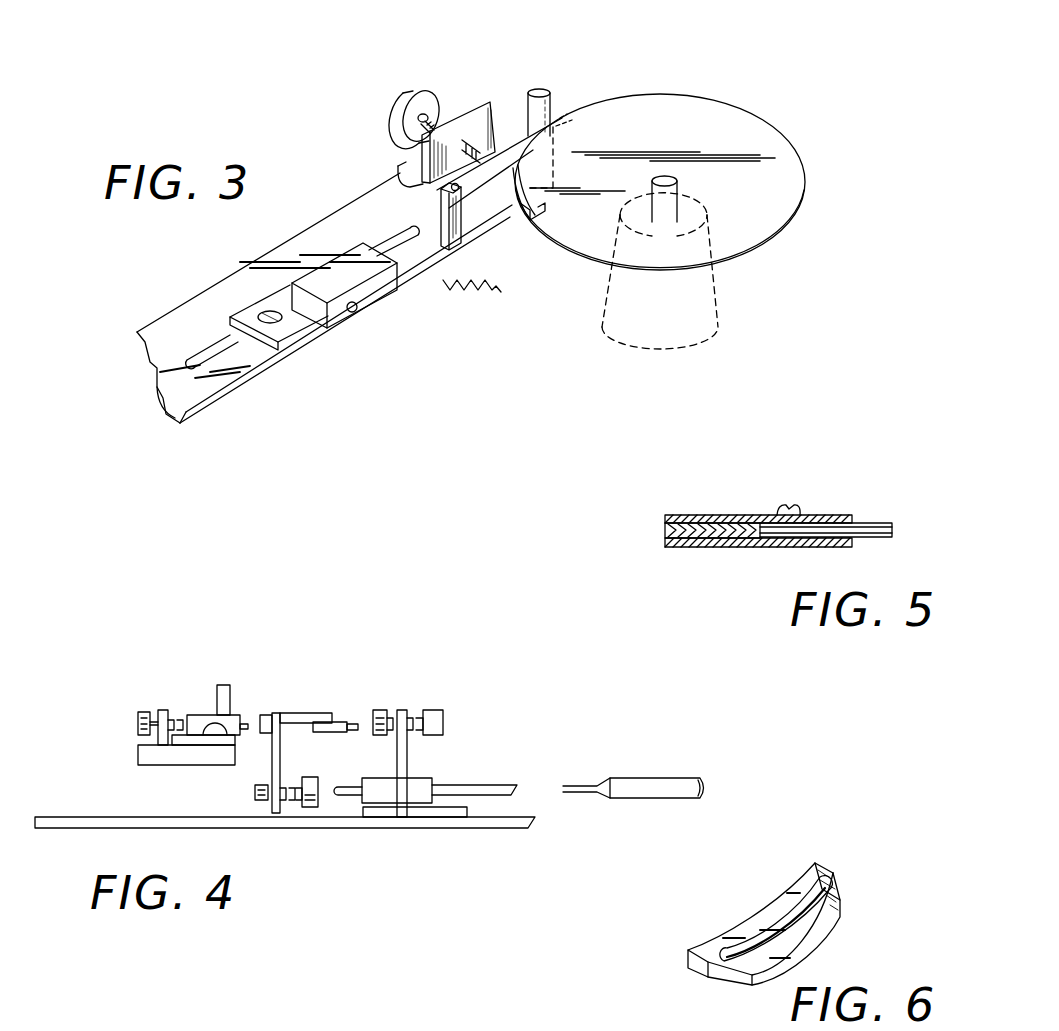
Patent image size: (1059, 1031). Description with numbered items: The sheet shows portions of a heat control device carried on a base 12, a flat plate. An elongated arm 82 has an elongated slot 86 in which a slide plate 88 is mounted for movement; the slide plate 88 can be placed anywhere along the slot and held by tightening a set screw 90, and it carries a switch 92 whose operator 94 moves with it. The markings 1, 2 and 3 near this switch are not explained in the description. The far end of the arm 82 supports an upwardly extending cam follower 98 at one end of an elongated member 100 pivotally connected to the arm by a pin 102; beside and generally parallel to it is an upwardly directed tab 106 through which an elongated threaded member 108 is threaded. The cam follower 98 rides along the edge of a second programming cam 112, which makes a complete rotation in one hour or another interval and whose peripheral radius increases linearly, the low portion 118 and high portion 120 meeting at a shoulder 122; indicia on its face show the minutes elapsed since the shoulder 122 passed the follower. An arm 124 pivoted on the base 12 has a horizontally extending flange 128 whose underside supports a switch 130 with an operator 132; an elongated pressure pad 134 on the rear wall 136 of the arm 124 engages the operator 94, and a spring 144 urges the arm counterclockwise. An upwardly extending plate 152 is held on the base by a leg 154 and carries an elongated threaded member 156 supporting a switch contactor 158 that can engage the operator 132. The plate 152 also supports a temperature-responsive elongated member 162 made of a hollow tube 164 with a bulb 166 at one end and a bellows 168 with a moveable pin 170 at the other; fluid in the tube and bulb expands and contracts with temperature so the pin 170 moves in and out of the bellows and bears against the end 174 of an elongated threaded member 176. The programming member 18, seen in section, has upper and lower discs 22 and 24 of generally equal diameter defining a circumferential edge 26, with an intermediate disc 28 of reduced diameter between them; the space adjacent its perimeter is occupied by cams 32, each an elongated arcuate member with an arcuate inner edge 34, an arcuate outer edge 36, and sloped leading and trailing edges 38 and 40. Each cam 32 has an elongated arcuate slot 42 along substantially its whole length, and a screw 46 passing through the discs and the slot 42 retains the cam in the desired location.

In FIG. 3, the section line 1 is at (296, 272).
In FIG. 3, the section line 2 is at (320, 250).
In FIG. 3, the section line 3 is at (343, 247).
In FIG. 4, the base 12 is at (96, 829).
In FIG. 5, the programming member 18 is at (692, 500).
In FIG. 5, the upper disc 22 is at (745, 515).
In FIG. 5, the lower disc 24 is at (697, 547).
In FIG. 5, the circumferential edge 26 is at (855, 515).
In FIG. 5, the intermediate disc 28 is at (665, 530).
In FIG. 5, the cams 32 is at (913, 492).
In FIG. 6, the cams 32 is at (845, 878).
In FIG. 6, the inner edge 34 is at (757, 921).
In FIG. 6, the outer edge 36 is at (815, 938).
In FIG. 6, the leading edge 38 is at (727, 977).
In FIG. 6, the trailing edge 40 is at (842, 890).
In FIG. 6, the elongated arcuate slot 42 is at (792, 918).
In FIG. 5, the screw 46 is at (795, 504).
In FIG. 3, the arm 82 is at (228, 390).
In FIG. 4, the arm 82 is at (147, 757).
In FIG. 3, the elongated slot 86 is at (205, 352).
In FIG. 3, the slide plate 88 is at (285, 335).
In FIG. 4, the slide plate 88 is at (183, 740).
In FIG. 3, the set screw 90 is at (260, 312).
In FIG. 4, the set screw 90 is at (212, 733).
In FIG. 3, the switch 92 is at (317, 313).
In FIG. 4, the switch 92 is at (210, 715).
In FIG. 3, the operator 94 is at (358, 308).
In FIG. 4, the operator 94 is at (245, 731).
In FIG. 3, the cam follower 98 is at (560, 72).
In FIG. 4, the cam follower 98 is at (225, 685).
In FIG. 3, the elongated member 100 is at (498, 208).
In FIG. 3, the pin 102 is at (402, 168).
In FIG. 3, the tab 106 is at (490, 103).
In FIG. 4, the tab 106 is at (162, 712).
In FIG. 3, the elongated threaded member 108 is at (408, 96).
In FIG. 4, the elongated threaded member 108 is at (138, 720).
In FIG. 3, the second programming cam 112 is at (800, 85).
In FIG. 3, the low portion 118 is at (607, 262).
In FIG. 3, the high portion 120 is at (563, 112).
In FIG. 3, the shoulder 122 is at (532, 225).
In FIG. 4, the arm 124 is at (262, 713).
In FIG. 4, the flange 128 is at (292, 716).
In FIG. 4, the switch 130 is at (338, 722).
In FIG. 4, the operator 132 is at (348, 722).
In FIG. 4, the pressure pad 134 is at (262, 714).
In FIG. 4, the rear wall 136 is at (262, 762).
In FIG. 3, the spring 144 is at (478, 293).
In FIG. 4, the plate 152 is at (407, 757).
In FIG. 4, the leg 154 is at (455, 812).
In FIG. 4, the elongated threaded member 156 is at (420, 710).
In FIG. 4, the switch contactor 158 is at (380, 710).
In FIG. 4, the elongated member 162 is at (508, 784).
In FIG. 4, the hollow tube 164 is at (575, 785).
In FIG. 4, the bulb 166 is at (650, 778).
In FIG. 4, the bellows 168 is at (432, 783).
In FIG. 4, the moveable pin 170 is at (350, 797).
In FIG. 4, the end 174 is at (313, 807).
In FIG. 4, the elongated threaded member 176 is at (290, 803).